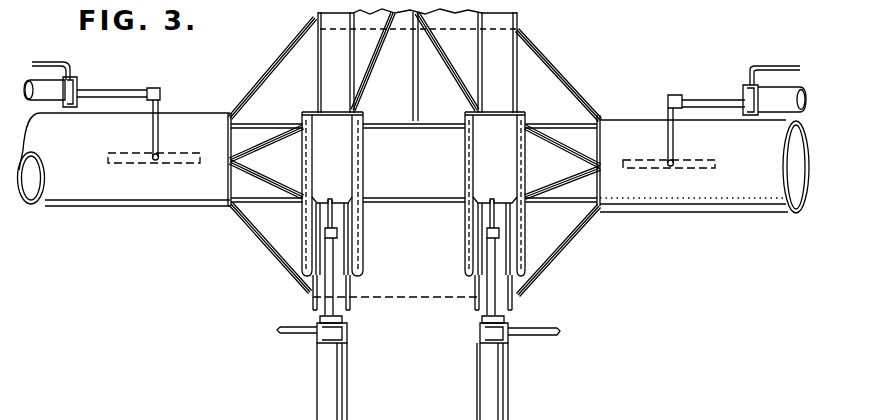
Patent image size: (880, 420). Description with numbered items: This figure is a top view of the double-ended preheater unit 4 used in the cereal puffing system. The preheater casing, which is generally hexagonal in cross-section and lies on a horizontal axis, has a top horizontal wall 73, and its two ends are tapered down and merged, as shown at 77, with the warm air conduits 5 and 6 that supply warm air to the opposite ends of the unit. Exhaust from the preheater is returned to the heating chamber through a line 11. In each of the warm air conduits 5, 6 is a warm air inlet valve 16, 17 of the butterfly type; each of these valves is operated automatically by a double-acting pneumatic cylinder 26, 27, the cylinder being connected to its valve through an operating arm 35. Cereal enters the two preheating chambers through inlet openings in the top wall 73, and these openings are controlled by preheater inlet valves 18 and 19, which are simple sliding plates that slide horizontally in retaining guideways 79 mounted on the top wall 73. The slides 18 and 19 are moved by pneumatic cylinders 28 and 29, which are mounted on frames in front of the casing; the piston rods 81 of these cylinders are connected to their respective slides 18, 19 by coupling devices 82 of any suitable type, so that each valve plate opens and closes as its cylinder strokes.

The double-ended preheater unit 4 is at (414, 272).
The warm air conduit 5 is at (82, 200).
The warm air conduit 6 is at (747, 205).
The exhaust return line 11 is at (438, 19).
The warm air inlet valve 16 is at (180, 155).
The warm air inlet valve 17 is at (638, 160).
The preheater inlet valve 18 is at (335, 160).
The preheater inlet valve 19 is at (493, 173).
The pneumatic cylinder 26 is at (45, 80).
The pneumatic cylinder 27 is at (777, 93).
The pneumatic cylinder 28 is at (337, 387).
The pneumatic cylinder 29 is at (493, 387).
The operating arm 35 is at (152, 128).
The top horizontal wall 73 is at (398, 166).
The tapered casing end 77 is at (280, 97).
The retaining guideway 79 is at (302, 238).
The piston rod 81 is at (332, 282).
The coupling device 82 is at (330, 235).